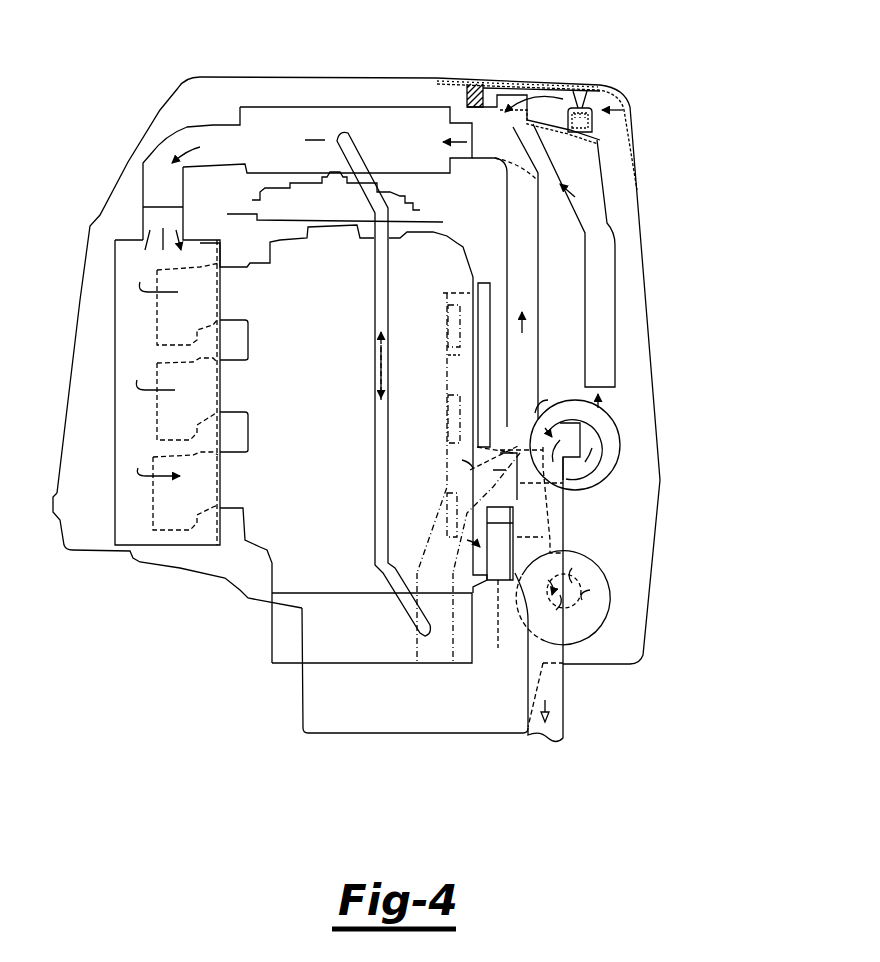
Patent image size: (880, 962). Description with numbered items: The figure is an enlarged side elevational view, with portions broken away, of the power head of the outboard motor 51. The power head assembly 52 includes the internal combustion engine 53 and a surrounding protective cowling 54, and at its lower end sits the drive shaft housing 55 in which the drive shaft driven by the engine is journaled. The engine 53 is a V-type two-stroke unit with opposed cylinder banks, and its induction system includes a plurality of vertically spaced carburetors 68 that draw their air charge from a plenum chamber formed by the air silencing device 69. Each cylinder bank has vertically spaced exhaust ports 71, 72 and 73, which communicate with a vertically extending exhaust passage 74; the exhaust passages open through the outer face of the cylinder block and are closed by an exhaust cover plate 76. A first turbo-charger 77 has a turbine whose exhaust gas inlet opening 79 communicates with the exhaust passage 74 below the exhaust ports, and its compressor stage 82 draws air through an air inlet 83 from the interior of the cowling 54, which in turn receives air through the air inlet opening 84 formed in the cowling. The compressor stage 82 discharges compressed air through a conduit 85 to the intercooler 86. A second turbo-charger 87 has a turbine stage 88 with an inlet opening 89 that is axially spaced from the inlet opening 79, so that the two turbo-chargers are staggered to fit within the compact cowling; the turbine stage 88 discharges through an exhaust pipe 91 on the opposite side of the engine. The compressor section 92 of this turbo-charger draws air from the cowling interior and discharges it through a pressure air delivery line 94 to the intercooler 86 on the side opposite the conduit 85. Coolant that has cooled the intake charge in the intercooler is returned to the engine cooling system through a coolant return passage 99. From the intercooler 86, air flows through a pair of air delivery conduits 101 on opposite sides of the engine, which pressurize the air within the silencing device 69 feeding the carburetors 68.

The outboard motor 51 is at (660, 182).
The power head assembly 52 is at (163, 125).
The internal combustion engine 53 is at (290, 537).
The protective cowling 54 is at (128, 160).
The drive shaft housing 55 is at (315, 710).
The carburetors 68 is at (157, 300).
The air silencing device 69 is at (115, 268).
The exhaust port 71 is at (450, 333).
The exhaust port 72 is at (453, 407).
The exhaust port 73 is at (453, 500).
The exhaust passage 74 is at (453, 350).
The exhaust cover plate 76 is at (483, 323).
The first turbo-charger 77 is at (602, 553).
The exhaust gas inlet opening 79 is at (500, 629).
The compressor stage 82 is at (611, 588).
The air inlet 83 is at (581, 588).
The air inlet opening 84 is at (618, 97).
The conduit 85 is at (497, 267).
The intercooler 86 is at (386, 107).
The second turbo-charger 87 is at (621, 420).
The turbine stage 88 is at (608, 450).
The inlet opening 89 is at (500, 397).
The exhaust pipe 91 is at (565, 690).
The compressor section 92 is at (608, 487).
The pressure air delivery line 94 is at (617, 290).
The coolant return passage 99 is at (372, 330).
The air delivery conduits 101 is at (210, 125).